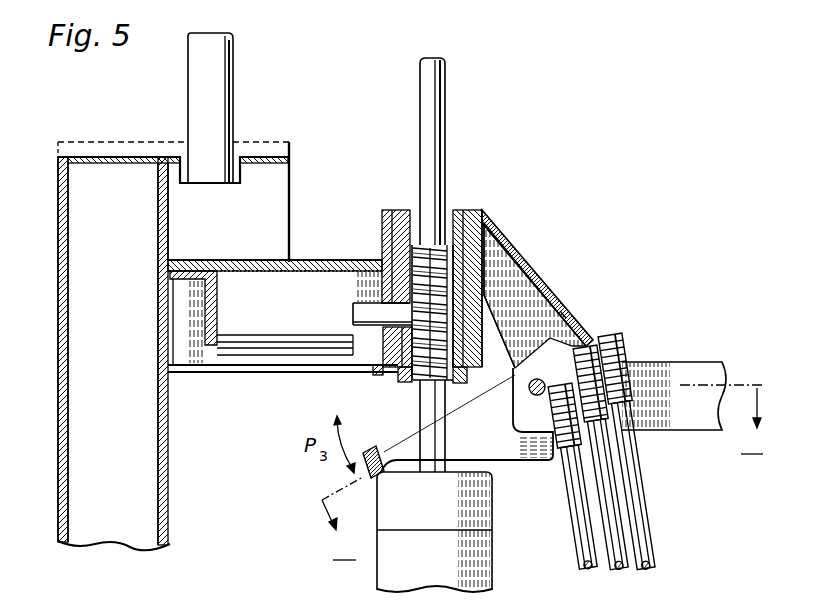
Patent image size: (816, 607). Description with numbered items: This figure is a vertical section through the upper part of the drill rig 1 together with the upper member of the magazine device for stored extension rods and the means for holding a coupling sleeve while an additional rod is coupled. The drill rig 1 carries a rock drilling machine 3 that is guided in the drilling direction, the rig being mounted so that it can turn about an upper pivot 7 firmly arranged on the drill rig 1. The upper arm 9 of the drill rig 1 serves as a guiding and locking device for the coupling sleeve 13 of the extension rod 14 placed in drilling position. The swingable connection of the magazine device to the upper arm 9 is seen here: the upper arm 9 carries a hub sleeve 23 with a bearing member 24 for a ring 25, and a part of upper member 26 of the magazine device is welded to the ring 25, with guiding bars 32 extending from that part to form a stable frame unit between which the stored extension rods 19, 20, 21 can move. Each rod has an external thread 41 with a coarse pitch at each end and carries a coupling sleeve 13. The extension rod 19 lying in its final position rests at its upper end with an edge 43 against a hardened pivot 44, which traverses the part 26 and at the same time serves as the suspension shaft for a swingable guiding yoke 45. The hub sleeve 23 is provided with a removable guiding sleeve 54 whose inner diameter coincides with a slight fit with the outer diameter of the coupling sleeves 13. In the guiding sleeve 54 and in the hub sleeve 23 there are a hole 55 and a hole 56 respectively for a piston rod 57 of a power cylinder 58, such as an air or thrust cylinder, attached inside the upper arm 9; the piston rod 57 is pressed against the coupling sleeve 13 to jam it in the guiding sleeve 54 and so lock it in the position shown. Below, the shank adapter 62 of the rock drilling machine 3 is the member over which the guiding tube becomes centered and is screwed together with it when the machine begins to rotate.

The drill rig 1 is at (137, 395).
The rock drilling machine 3 is at (388, 576).
The upper pivot 7 is at (214, 69).
The upper arm 9 is at (335, 258).
The coupling sleeve 13 is at (420, 386).
The extension rod 14 is at (436, 76).
The extension rod 19 is at (573, 525).
The extension rod 20 is at (610, 553).
The extension rod 21 is at (638, 556).
The hub sleeve 23 is at (484, 270).
The bearing member 24 is at (400, 210).
The ring 25 is at (382, 222).
The part of upper member 26 is at (512, 290).
The guiding bars 32 is at (670, 366).
The external thread 41 is at (613, 345).
The edge 43 is at (543, 381).
The hardened pivot 44 is at (560, 311).
The guiding yoke 45 is at (385, 456).
The guiding sleeve 54 is at (456, 212).
The hole 55 is at (380, 300).
The hole 56 is at (383, 325).
The piston rod 57 is at (365, 310).
The power cylinder 58 is at (288, 323).
The shank adapter 62 is at (425, 378).